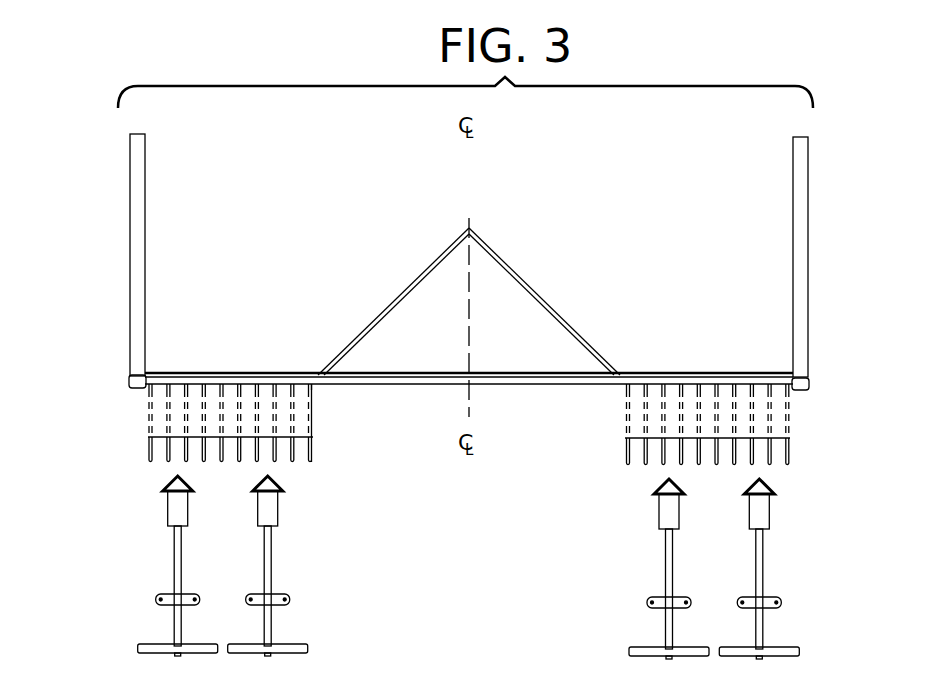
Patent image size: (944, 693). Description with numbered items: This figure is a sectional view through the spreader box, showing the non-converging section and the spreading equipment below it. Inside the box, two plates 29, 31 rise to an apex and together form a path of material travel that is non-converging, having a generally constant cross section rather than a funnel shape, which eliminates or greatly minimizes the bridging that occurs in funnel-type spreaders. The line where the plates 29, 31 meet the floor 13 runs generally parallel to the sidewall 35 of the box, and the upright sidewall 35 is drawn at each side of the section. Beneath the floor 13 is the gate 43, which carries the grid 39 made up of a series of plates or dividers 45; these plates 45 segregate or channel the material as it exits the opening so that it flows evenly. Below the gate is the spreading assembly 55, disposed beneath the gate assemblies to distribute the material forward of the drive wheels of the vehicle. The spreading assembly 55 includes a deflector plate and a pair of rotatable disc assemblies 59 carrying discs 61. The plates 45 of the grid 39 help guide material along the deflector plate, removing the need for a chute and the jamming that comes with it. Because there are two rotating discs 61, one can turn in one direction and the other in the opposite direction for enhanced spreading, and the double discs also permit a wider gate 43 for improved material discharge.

The floor 13 is at (627, 373).
The plate 29 is at (395, 300).
The plate 31 is at (546, 302).
The sidewall 35 is at (793, 258).
The grid 39 is at (616, 455).
The gate 43 is at (297, 463).
The plates or dividers 45 is at (314, 450).
The spreading assembly 55 is at (552, 552).
The rotatable disc assembly 59 is at (283, 572).
The disc 61 is at (292, 644).